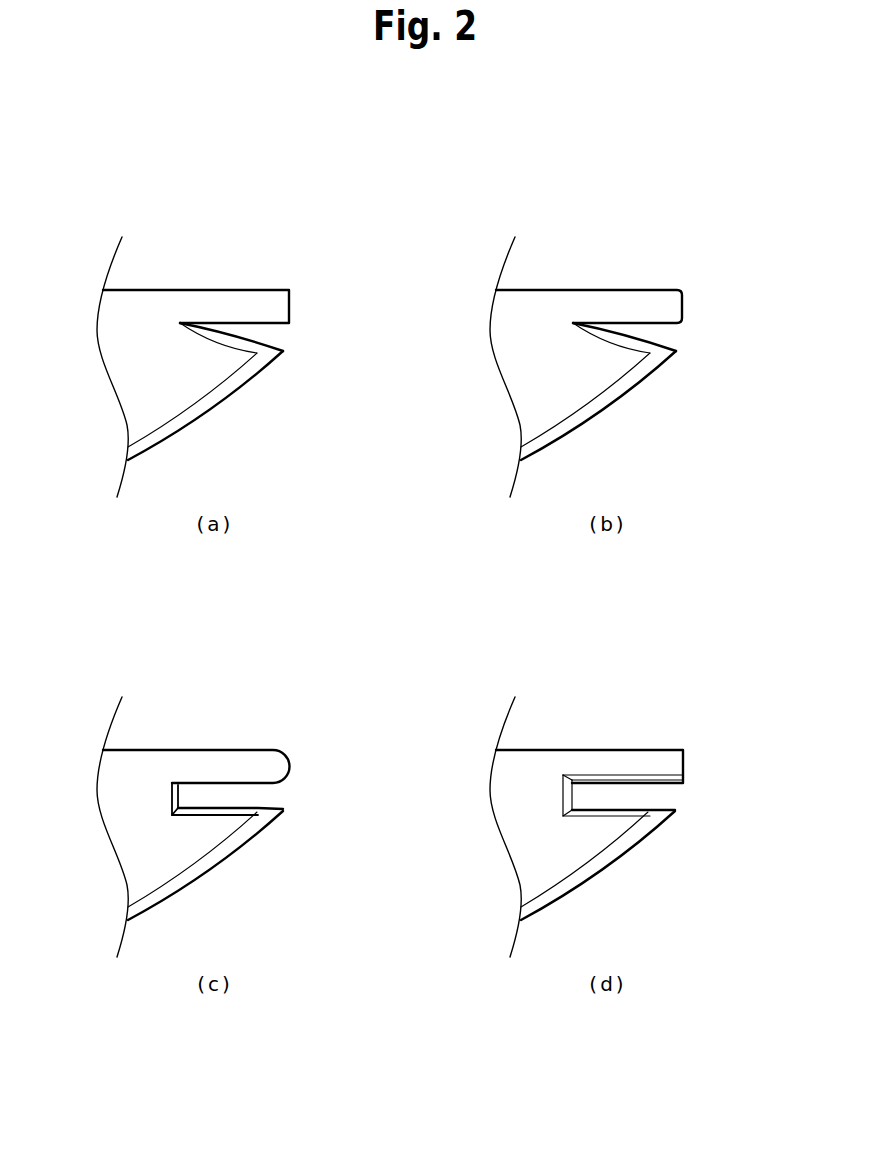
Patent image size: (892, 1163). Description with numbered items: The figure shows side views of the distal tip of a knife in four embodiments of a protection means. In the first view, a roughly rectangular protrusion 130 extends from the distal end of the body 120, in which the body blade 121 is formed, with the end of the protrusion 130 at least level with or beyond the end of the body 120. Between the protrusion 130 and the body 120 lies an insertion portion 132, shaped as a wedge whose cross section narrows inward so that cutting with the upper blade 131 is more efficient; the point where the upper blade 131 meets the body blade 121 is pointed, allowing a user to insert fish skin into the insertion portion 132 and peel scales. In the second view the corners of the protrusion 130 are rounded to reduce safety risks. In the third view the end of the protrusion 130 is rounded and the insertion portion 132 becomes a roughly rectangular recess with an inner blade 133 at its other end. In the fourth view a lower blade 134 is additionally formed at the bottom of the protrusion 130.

The body 120 is at (162, 410).
The body blade 121 is at (225, 398).
The protrusion 130 is at (247, 300).
The upper blade 131 is at (277, 353).
The insertion portion 132 is at (261, 339).
The inner blade 133 is at (177, 795).
The lower blade 134 is at (668, 780).